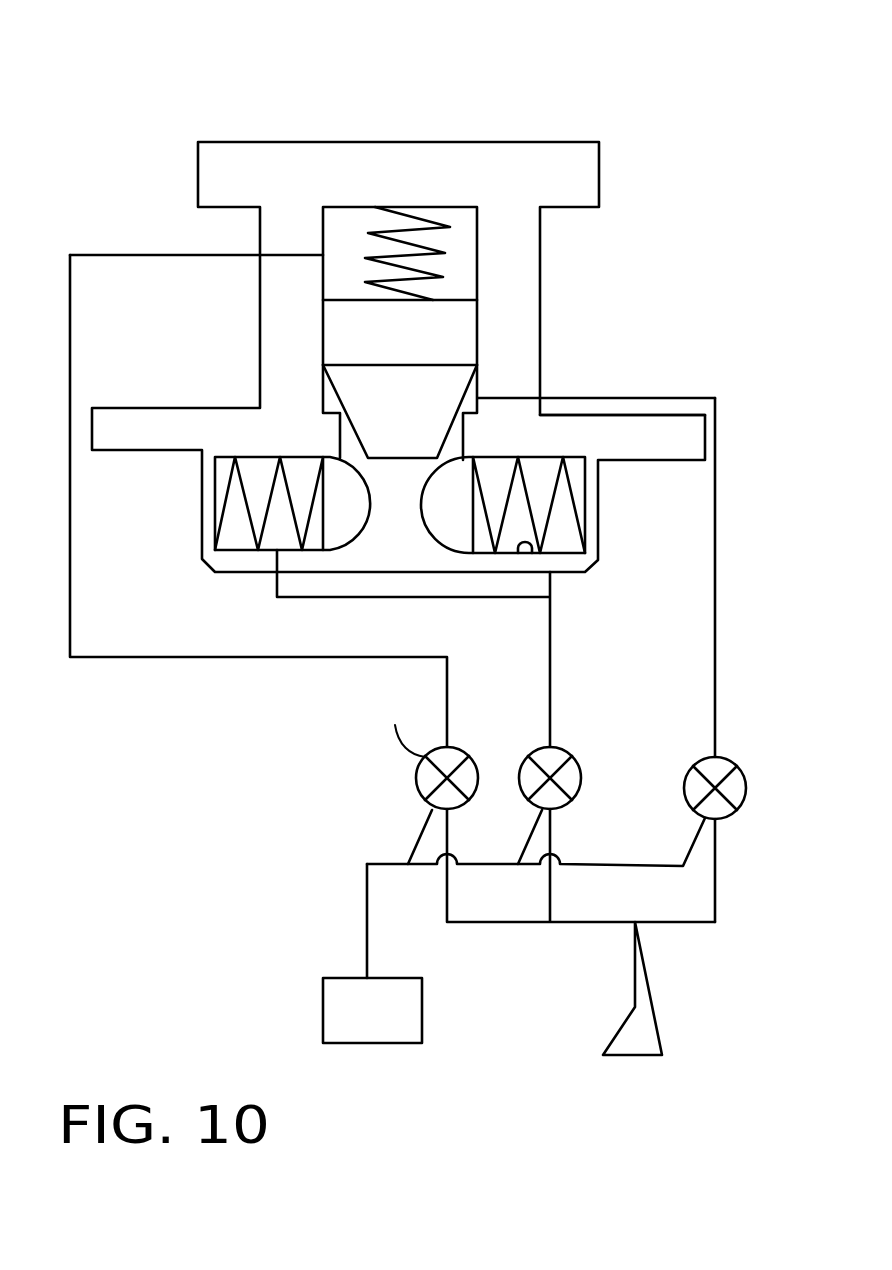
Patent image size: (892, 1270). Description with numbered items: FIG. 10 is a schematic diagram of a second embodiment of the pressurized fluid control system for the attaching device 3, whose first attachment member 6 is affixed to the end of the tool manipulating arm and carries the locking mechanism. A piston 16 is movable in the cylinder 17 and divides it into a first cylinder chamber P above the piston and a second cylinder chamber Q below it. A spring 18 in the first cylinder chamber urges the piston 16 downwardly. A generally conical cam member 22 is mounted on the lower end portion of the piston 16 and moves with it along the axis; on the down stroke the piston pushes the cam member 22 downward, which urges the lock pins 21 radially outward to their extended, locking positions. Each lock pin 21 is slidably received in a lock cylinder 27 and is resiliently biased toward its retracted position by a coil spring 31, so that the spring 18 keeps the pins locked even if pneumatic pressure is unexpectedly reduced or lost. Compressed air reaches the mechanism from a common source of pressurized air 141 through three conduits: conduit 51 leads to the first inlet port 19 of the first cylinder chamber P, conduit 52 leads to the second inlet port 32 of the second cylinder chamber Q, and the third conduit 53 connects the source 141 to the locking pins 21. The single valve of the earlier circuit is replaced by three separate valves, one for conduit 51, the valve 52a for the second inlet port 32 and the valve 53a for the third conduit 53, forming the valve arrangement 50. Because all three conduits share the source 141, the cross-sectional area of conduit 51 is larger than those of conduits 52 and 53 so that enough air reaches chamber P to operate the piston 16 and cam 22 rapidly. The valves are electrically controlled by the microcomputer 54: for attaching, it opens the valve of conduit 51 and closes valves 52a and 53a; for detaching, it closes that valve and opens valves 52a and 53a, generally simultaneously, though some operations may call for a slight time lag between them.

The attaching device 3 is at (195, 105).
The first cylinder chamber P is at (467, 215).
The spring 18 is at (412, 215).
The cylinder 17 is at (465, 270).
The piston 16 is at (432, 318).
The cam member 22 is at (365, 383).
The first inlet port 19 is at (258, 253).
The second cylinder chamber Q is at (330, 405).
The second inlet port 32 is at (545, 393).
The first attachment member 6 is at (620, 332).
The lock pin 21 is at (332, 520).
The lock cylinder 27 is at (257, 463).
The coil spring 31 is at (247, 517).
The conduit 51 is at (138, 660).
The third conduit 53 is at (548, 682).
The valve 53a is at (575, 760).
The conduit 52 is at (713, 665).
The valve 52a is at (695, 770).
The control valve unit 50 is at (300, 728).
The microcomputer 54 is at (323, 1018).
The source of pressurized air 141 is at (630, 1043).